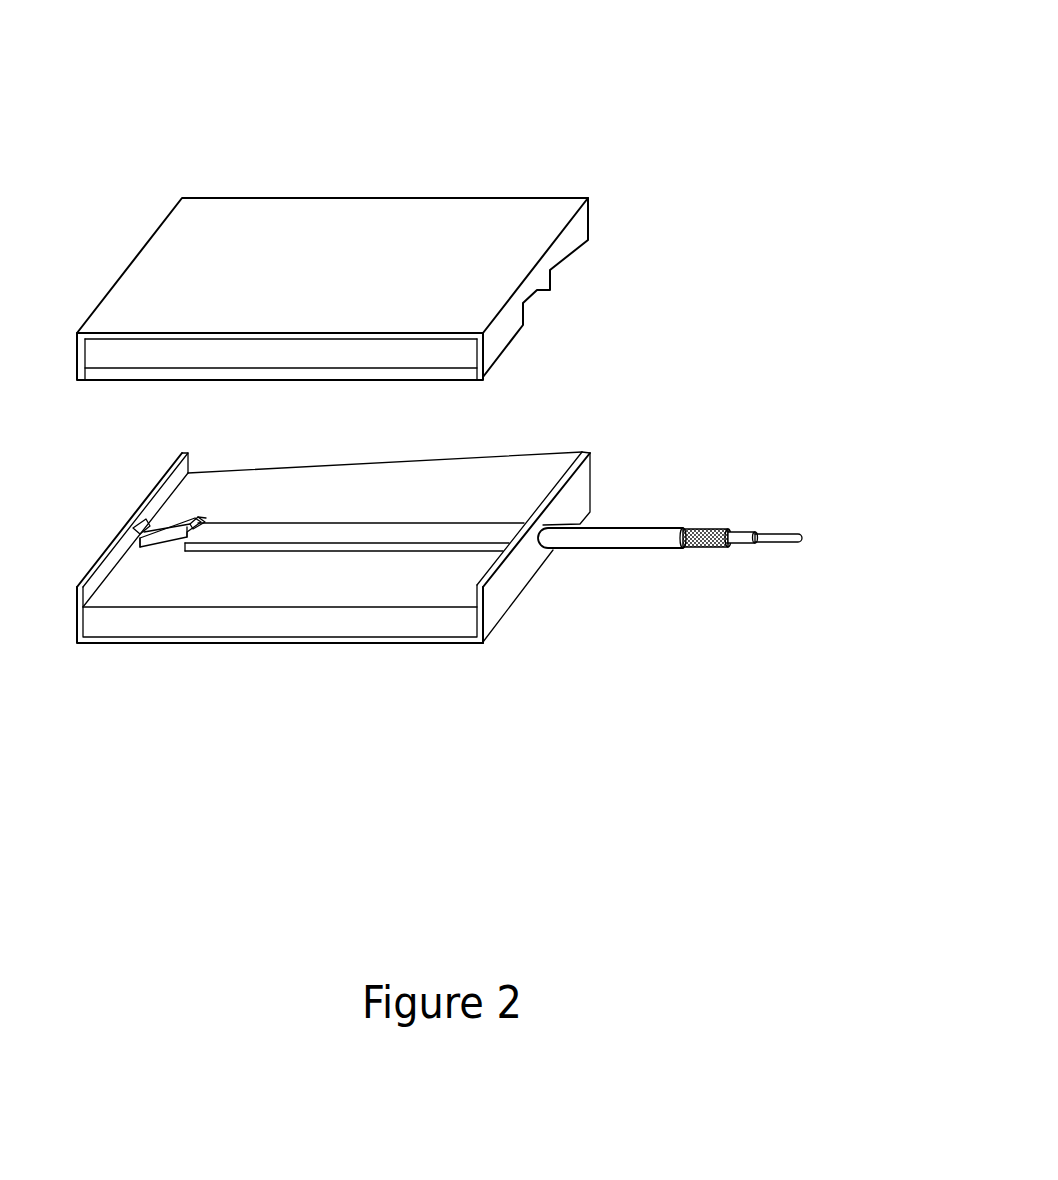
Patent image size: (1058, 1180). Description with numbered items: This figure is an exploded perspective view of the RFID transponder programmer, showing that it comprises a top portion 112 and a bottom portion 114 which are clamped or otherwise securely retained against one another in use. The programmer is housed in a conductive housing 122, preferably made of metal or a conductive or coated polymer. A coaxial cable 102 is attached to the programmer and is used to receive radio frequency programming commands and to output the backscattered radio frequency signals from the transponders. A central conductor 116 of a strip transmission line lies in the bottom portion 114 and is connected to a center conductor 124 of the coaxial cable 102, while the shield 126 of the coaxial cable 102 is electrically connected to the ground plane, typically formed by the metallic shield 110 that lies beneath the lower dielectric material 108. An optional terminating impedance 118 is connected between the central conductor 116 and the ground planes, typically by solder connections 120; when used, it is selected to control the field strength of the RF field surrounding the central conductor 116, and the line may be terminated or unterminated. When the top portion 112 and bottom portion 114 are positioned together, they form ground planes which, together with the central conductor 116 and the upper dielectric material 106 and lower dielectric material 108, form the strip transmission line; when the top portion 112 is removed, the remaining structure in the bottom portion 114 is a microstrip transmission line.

The coaxial cable 102 is at (733, 524).
The upper dielectric material 106 is at (433, 345).
The lower dielectric material 108 is at (168, 622).
The metallic shield 110 is at (440, 645).
The top portion 112 is at (412, 237).
The bottom portion 114 is at (344, 584).
The central conductor 116 is at (312, 530).
The terminating impedance 118 is at (175, 530).
The solder connections 120 is at (200, 520).
The conductive housing 122 is at (578, 240).
The center conductor 124 is at (793, 542).
The shield 126 is at (705, 548).